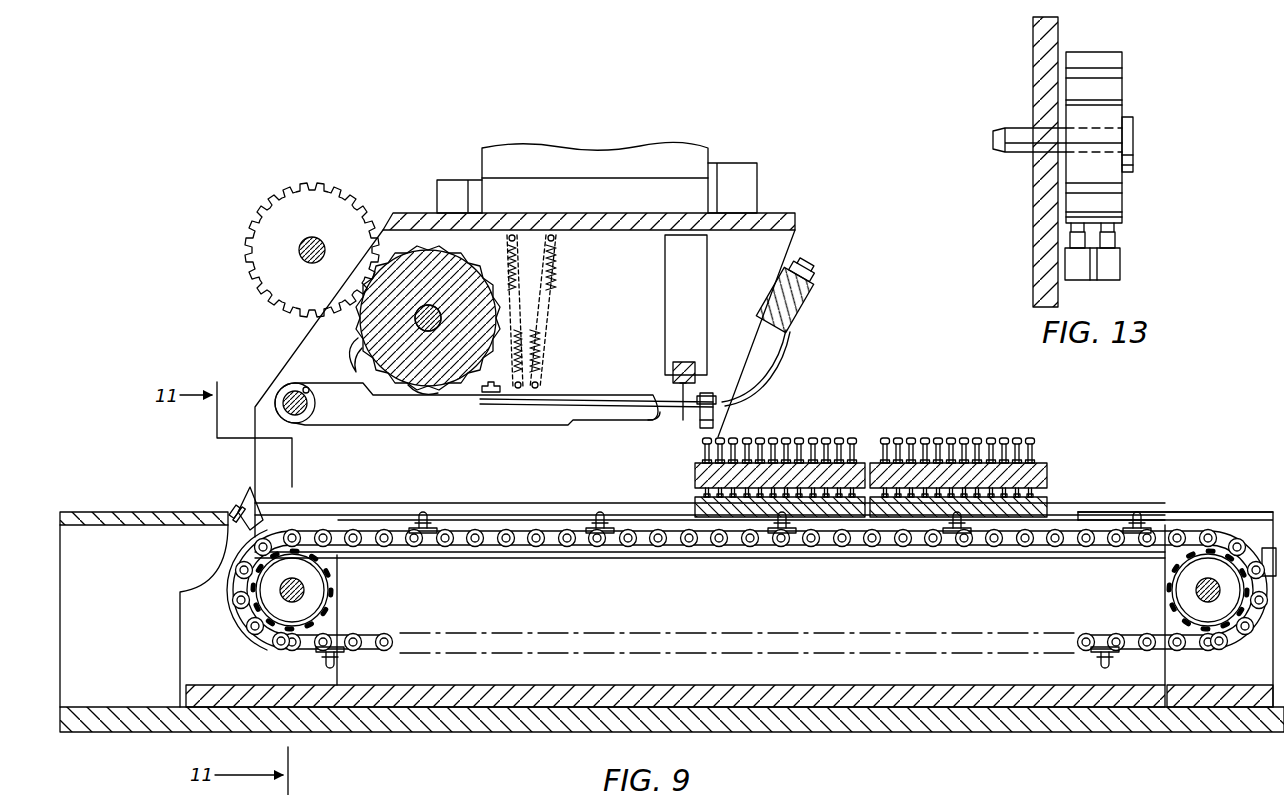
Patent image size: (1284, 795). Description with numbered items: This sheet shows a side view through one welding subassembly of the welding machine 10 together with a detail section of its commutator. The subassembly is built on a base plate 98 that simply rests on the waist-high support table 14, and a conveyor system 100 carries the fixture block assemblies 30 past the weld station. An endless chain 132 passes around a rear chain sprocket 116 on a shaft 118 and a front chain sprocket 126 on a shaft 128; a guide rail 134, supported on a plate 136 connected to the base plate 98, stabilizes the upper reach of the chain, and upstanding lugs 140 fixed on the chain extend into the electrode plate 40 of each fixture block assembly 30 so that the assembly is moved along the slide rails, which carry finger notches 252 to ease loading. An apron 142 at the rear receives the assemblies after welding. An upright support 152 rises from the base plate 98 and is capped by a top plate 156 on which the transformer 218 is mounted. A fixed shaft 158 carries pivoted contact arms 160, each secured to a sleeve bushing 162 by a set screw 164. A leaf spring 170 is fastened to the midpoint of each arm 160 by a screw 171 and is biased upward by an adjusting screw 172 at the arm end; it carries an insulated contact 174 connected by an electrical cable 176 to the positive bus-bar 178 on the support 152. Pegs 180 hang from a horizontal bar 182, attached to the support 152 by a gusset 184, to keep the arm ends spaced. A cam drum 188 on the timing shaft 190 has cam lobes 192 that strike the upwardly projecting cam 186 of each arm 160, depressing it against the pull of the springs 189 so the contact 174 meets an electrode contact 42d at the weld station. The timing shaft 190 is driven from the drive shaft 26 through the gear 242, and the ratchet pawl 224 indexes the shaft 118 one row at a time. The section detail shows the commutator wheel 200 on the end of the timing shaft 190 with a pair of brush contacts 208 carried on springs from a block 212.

In FIG. 9, the welding machine 10 is at (1205, 522).
In FIG. 9, the support table 14 is at (764, 732).
In FIG. 9, the drive shaft 26 is at (305, 248).
In FIG. 9, the fixture block assembly 30 is at (812, 400).
In FIG. 9, the electrode plate 40 is at (694, 506).
In FIG. 9, the electrode contact 42d is at (706, 440).
In FIG. 9, the base plate 98 is at (845, 690).
In FIG. 9, the conveyor system 100 is at (1268, 548).
In FIG. 9, the chain sprocket 116 is at (314, 595).
In FIG. 9, the shaft 118 is at (300, 585).
In FIG. 9, the chain sprocket 126 is at (1188, 585).
In FIG. 9, the shaft 128 is at (1200, 594).
In FIG. 9, the endless chain 132 is at (484, 541).
In FIG. 9, the guide rail 134 is at (363, 522).
In FIG. 9, the plate 136 is at (722, 612).
In FIG. 9, the lug 140 is at (425, 516).
In FIG. 9, the apron 142 is at (165, 514).
In FIG. 9, the upright support 152 is at (776, 252).
In FIG. 9, the top plate 156 is at (766, 216).
In FIG. 9, the fixed shaft 158 is at (284, 392).
In FIG. 9, the contact arm 160 is at (413, 418).
In FIG. 9, the sleeve bushing 162 is at (312, 403).
In FIG. 9, the set screw 164 is at (309, 388).
In FIG. 9, the leaf spring 170 is at (604, 400).
In FIG. 9, the screw 171 is at (490, 388).
In FIG. 9, the adjusting screw 172 is at (655, 423).
In FIG. 9, the contact 174 is at (713, 415).
In FIG. 9, the electrical cable 176 is at (776, 370).
In FIG. 9, the positive bus-bar 178 is at (796, 290).
In FIG. 9, the peg 180 is at (680, 390).
In FIG. 9, the horizontal bar 182 is at (673, 366).
In FIG. 9, the gusset 184 is at (700, 277).
In FIG. 9, the cam 186 is at (427, 393).
In FIG. 9, the cam drum 188 is at (437, 266).
In FIG. 9, the springs 189 is at (516, 304).
In FIG. 9, the timing shaft 190 is at (438, 326).
In FIG. 13, the timing shaft 190 is at (1133, 142).
In FIG. 9, the cam lobe 192 is at (368, 357).
In FIG. 13, the commutator wheel 200 is at (1115, 90).
In FIG. 13, the brush contacts 208 is at (1112, 229).
In FIG. 13, the block 212 is at (1120, 266).
In FIG. 9, the transformer 218 is at (592, 144).
In FIG. 9, the ratchet pawl 224 is at (245, 496).
In FIG. 9, the gear 242 is at (246, 230).
In FIG. 9, the finger notch 252 is at (1078, 511).